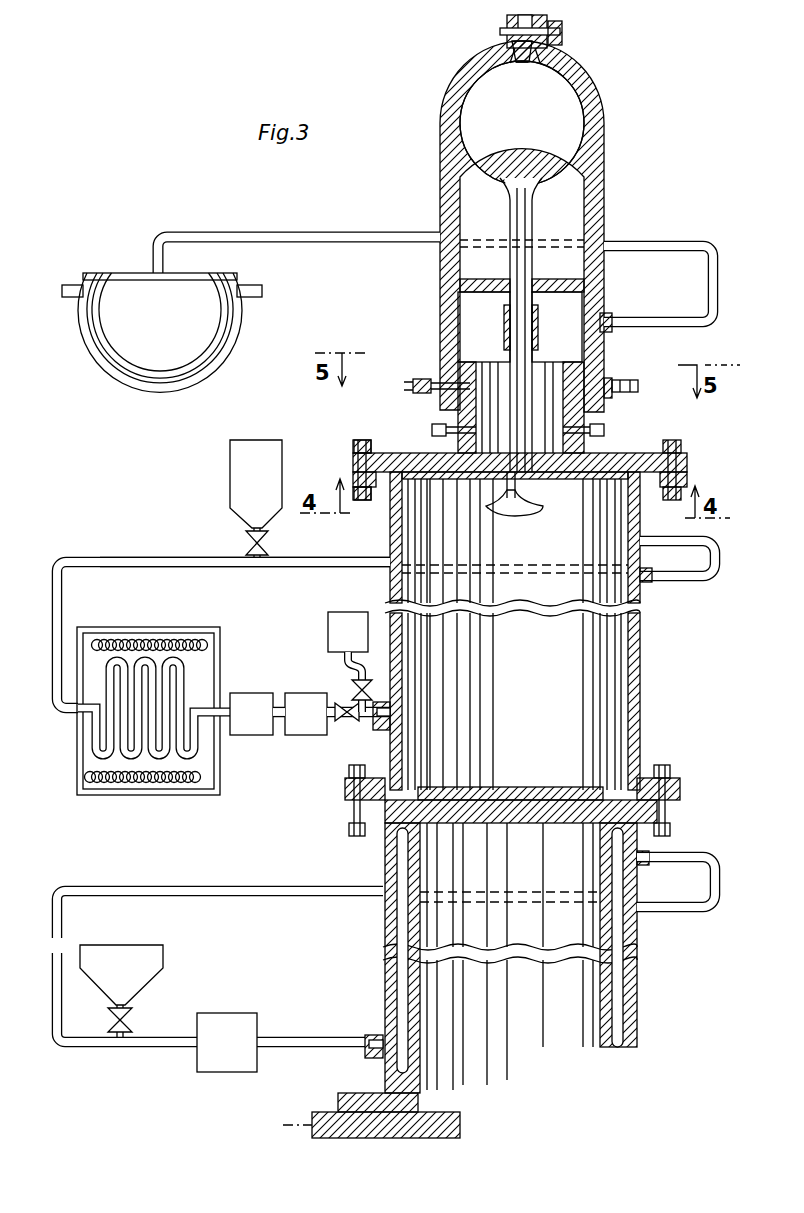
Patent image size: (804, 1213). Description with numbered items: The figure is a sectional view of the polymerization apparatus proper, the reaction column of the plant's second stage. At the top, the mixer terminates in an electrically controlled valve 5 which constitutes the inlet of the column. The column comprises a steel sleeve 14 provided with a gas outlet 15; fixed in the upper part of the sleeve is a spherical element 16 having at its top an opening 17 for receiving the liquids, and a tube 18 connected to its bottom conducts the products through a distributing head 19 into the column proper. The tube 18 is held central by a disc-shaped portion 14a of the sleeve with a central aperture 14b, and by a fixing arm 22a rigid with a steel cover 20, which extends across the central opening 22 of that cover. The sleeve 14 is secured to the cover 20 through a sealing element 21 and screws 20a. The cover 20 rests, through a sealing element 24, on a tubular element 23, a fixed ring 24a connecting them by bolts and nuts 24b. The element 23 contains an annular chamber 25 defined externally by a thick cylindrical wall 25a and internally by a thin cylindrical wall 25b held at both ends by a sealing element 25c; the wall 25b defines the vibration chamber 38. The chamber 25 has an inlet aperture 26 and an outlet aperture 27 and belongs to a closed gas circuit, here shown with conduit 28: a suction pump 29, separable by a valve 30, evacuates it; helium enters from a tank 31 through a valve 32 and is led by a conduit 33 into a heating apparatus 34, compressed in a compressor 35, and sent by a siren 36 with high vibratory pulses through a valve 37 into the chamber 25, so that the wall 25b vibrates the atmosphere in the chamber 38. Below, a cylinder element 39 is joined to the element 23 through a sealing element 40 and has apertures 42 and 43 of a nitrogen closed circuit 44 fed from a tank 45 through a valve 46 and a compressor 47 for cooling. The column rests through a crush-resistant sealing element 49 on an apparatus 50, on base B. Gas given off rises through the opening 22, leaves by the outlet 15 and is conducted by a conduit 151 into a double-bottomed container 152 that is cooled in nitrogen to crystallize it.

The electrically controlled valve 5 is at (502, 42).
The steel sleeve 14 is at (442, 290).
The disc-shaped portion 14a is at (485, 272).
The central aperture 14b is at (532, 268).
The gas outlet 15 is at (610, 320).
The conduit 151 is at (272, 236).
The container 152 is at (148, 292).
The spherical element 16 is at (572, 178).
The opening 17 is at (523, 64).
The tube 18 is at (508, 230).
The distributing head 19 is at (486, 510).
The steel cover 20 is at (400, 452).
The screws 20a is at (448, 372).
The sealing element 21 is at (470, 362).
The opening 22 is at (545, 362).
The fixing arm 22a is at (458, 417).
The tubular element 23 is at (640, 628).
The sealing element 24 is at (352, 462).
The fixed ring 24a is at (365, 500).
The bolts and nuts 24b is at (355, 440).
The annular chamber 25 is at (635, 678).
The thick cylindrical wall 25a is at (636, 735).
The cylindrical wall 25b is at (608, 702).
The sealing element 25c is at (608, 480).
The aperture 26 is at (380, 730).
The aperture 27 is at (652, 575).
The conduit 28 is at (325, 560).
The suction pump 29 is at (348, 632).
The valve 30 is at (353, 686).
The tank 31 is at (240, 490).
The valve 32 is at (243, 545).
The conduit 33 is at (125, 558).
The heating apparatus 34 is at (203, 668).
The compressor 35 is at (251, 714).
The siren 36 is at (300, 714).
The valve 37 is at (345, 722).
The vibration chamber 38 is at (515, 634).
The cylinder element 39 is at (352, 805).
The sealing element 40 is at (348, 792).
The aperture 42 is at (645, 873).
The aperture 43 is at (370, 1035).
The closed circuit 44 is at (100, 898).
The tank 45 is at (121, 975).
The valve 46 is at (130, 1020).
The compressor 47 is at (227, 1042).
The sealing element 49 is at (432, 1108).
The apparatus 50 is at (328, 1112).
The base plate B is at (369, 1118).